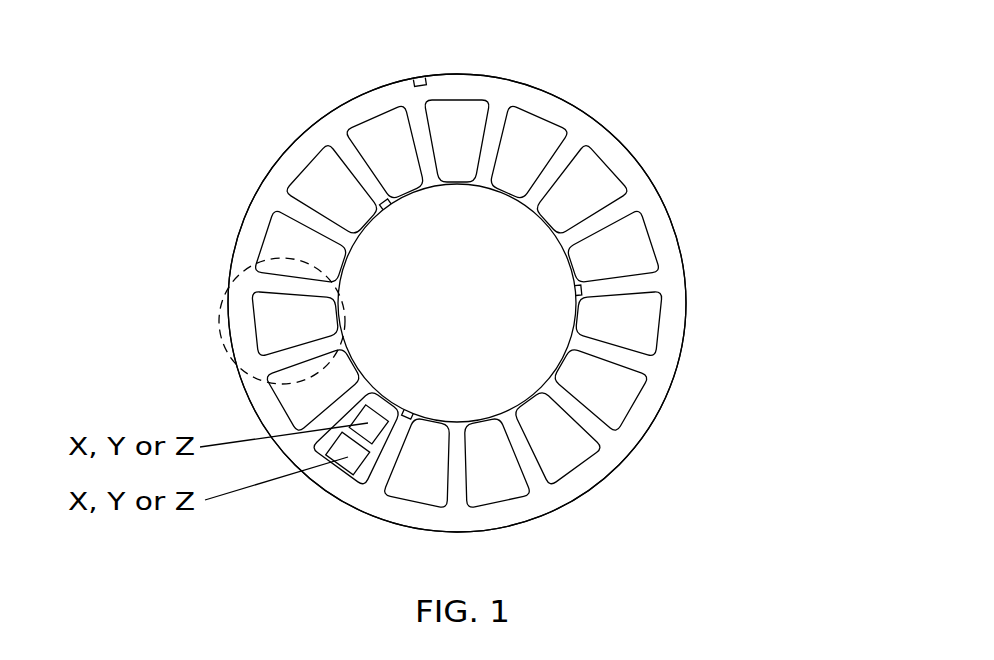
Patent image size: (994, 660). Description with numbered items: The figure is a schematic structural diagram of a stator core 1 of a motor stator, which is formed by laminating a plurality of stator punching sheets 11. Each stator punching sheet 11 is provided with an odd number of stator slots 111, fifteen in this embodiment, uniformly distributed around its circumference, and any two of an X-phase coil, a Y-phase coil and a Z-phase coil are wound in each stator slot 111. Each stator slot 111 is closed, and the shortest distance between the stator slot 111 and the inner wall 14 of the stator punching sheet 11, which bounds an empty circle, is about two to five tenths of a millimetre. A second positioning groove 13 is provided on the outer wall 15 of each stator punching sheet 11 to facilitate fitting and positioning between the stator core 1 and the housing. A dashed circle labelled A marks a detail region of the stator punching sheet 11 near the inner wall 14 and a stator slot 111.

The stator core 1 is at (655, 125).
The stator punching sheet 11 is at (640, 205).
The stator slot 111 is at (617, 260).
The second positioning groove 13 is at (419, 77).
The inner wall of the stator punching sheet 14 is at (563, 255).
The outer wall of the stator punching sheet 15 is at (653, 427).
The enlarged detail region A is at (217, 320).